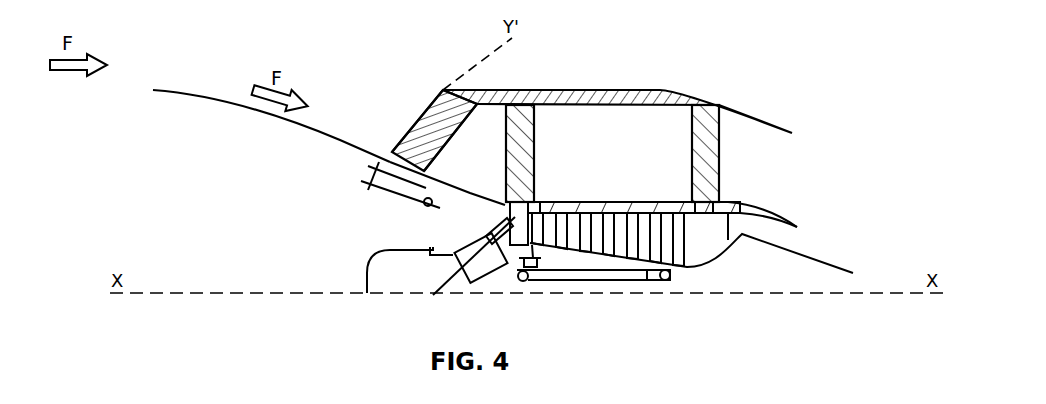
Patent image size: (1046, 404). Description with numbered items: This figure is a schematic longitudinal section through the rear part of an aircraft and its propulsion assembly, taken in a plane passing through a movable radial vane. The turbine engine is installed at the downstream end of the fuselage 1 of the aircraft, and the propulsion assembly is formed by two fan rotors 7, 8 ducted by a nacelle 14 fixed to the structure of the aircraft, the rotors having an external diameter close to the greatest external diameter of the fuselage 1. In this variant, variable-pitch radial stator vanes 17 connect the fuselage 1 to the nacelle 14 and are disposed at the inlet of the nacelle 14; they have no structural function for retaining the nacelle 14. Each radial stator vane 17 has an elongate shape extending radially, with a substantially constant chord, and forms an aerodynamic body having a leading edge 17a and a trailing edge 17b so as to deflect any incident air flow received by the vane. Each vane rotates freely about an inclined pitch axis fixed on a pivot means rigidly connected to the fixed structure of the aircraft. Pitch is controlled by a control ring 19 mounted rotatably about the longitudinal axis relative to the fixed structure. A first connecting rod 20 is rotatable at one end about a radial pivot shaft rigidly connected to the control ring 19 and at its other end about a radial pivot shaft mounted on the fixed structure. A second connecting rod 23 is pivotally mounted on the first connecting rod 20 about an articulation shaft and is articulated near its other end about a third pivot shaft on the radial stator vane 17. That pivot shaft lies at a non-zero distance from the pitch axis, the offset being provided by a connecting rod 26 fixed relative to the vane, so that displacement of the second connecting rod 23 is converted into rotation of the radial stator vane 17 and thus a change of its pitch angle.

The fuselage 1 is at (193, 92).
The fan rotor 7 is at (520, 120).
The fan rotor 8 is at (708, 152).
The nacelle 14 is at (630, 90).
The radial stator vane 17 is at (433, 130).
The leading edge 17a is at (403, 138).
The trailing edge 17b is at (435, 157).
The control ring 19 is at (424, 205).
The first connecting rod 20 is at (390, 190).
The second connecting rod 23 is at (378, 173).
The connecting rod 26 is at (343, 143).